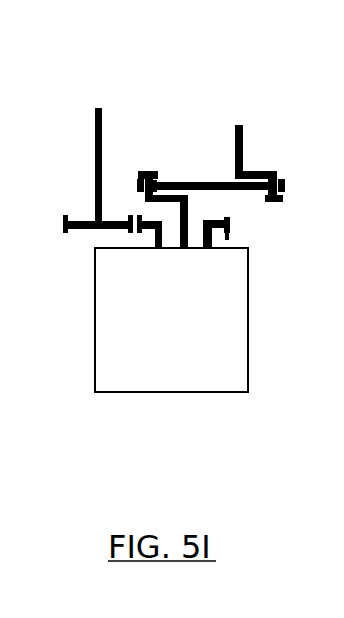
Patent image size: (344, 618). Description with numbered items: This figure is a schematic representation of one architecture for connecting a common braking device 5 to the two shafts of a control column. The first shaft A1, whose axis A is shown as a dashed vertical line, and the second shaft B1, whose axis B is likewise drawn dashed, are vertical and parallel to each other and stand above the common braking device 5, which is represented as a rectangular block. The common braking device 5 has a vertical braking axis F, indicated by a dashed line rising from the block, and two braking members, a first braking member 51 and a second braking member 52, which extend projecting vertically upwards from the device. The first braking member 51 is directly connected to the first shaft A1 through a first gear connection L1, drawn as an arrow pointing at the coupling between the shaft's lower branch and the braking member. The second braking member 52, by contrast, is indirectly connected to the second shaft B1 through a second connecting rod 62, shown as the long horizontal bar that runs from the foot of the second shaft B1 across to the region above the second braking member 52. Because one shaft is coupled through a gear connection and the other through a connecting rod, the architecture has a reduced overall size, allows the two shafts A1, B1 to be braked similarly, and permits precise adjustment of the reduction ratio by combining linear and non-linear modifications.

The axis A is at (97, 101).
The first shaft A1 is at (94, 168).
The second braking member 52 is at (145, 171).
The braking axis F is at (182, 176).
The second connecting rod 62 is at (223, 182).
The axis B is at (238, 119).
The second shaft B1 is at (244, 128).
The first braking member 51 is at (230, 233).
The first gear connection L1 is at (133, 233).
The common braking device 5 is at (165, 333).